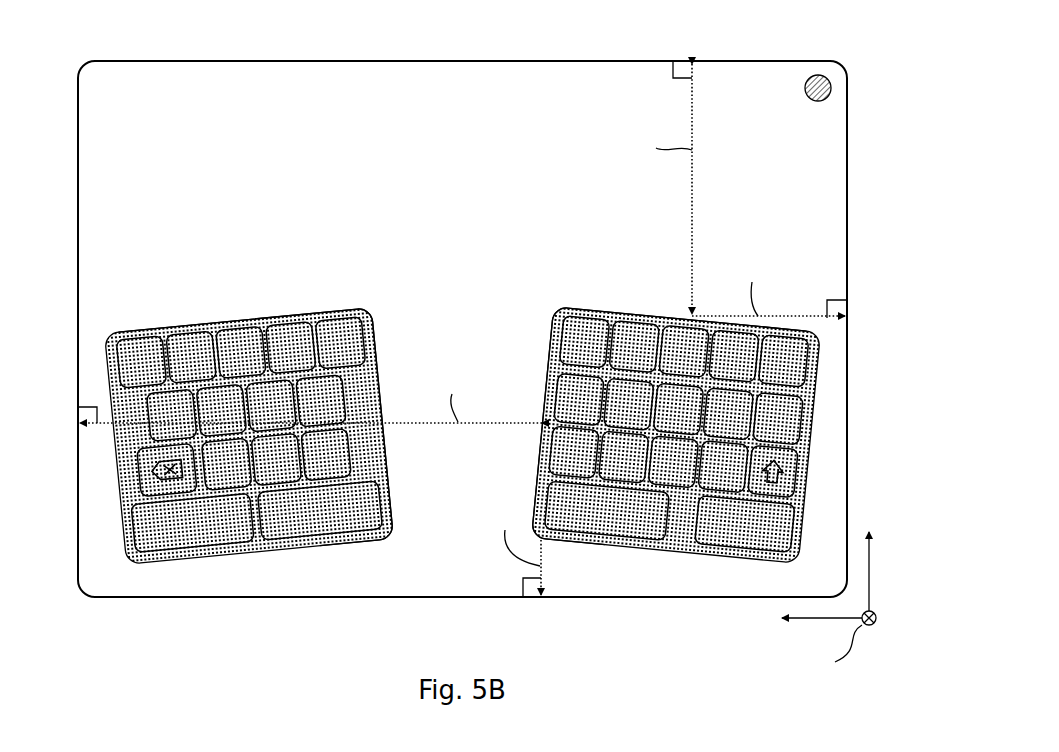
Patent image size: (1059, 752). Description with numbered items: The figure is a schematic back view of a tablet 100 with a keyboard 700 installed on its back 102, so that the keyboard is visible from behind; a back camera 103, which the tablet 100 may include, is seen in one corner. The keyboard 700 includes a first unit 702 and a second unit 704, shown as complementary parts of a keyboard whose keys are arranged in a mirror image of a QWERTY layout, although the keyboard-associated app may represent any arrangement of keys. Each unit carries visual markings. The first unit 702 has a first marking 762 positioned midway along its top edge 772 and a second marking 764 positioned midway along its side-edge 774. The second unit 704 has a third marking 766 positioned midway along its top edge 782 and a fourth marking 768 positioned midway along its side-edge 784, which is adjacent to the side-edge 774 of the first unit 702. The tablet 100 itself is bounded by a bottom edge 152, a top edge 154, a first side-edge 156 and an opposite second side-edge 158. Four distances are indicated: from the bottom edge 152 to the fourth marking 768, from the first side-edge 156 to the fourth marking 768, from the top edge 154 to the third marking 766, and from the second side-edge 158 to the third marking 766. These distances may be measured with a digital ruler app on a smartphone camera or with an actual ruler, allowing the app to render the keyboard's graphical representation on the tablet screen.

The tablet 100 is at (288, 661).
The back 102 is at (497, 100).
The back camera 103 is at (817, 115).
The bottom edge 152 is at (593, 597).
The top edge 154 is at (643, 61).
The first side-edge 156 is at (78, 112).
The second side-edge 158 is at (847, 112).
The keyboard 700 is at (525, 338).
The first unit 702 is at (267, 299).
The second unit 704 is at (630, 299).
The first marking 762 is at (215, 318).
The second marking 764 is at (383, 410).
The third marking 766 is at (690, 318).
The fourth marking 768 is at (545, 412).
The top edge 772 is at (315, 311).
The side-edge 774 is at (395, 478).
The top edge 782 is at (576, 306).
The side-edge 784 is at (537, 487).